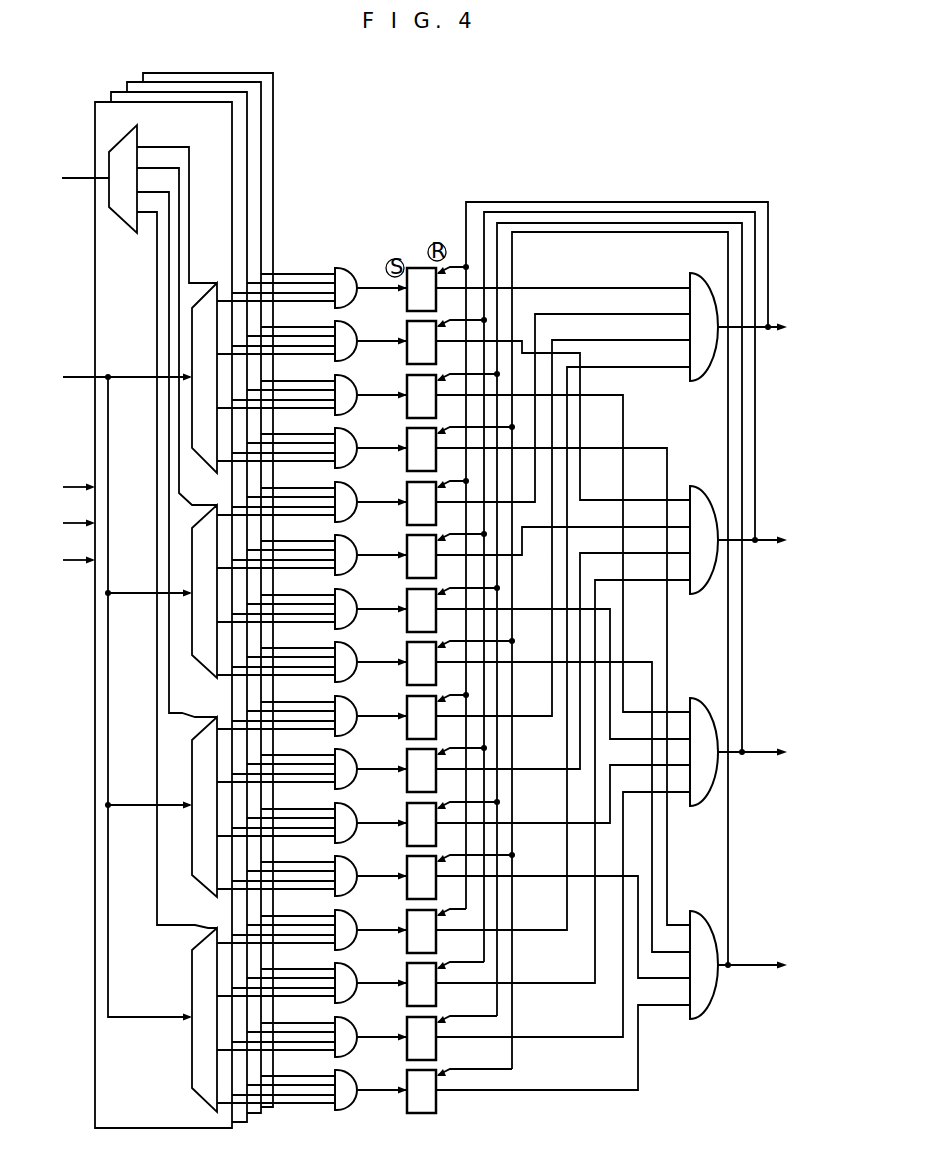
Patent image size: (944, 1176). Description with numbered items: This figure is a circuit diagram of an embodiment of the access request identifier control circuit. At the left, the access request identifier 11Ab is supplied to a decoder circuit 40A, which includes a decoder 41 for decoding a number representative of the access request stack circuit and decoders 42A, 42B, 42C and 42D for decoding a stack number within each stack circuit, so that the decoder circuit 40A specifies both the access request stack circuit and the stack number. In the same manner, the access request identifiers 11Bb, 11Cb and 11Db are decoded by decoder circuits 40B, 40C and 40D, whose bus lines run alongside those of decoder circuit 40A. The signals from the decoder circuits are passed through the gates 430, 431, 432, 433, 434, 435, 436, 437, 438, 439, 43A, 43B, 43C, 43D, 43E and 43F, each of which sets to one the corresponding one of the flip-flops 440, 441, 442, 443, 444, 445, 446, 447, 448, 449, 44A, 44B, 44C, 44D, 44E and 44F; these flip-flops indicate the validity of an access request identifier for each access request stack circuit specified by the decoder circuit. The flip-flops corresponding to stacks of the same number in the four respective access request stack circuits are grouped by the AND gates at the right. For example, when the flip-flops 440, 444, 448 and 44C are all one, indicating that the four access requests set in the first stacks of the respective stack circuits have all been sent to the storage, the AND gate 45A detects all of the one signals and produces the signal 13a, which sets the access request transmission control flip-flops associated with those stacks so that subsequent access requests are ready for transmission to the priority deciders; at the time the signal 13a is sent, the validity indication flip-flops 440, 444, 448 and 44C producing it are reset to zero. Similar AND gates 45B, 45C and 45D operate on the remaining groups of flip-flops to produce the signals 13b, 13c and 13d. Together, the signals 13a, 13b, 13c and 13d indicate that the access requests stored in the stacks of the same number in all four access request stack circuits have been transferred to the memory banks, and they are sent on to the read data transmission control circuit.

The decoder circuit 40A is at (97, 101).
The decoder circuit 40B is at (116, 91).
The decoder circuit 40C is at (137, 81).
The decoder circuit 40D is at (176, 72).
The decoder 41 is at (158, 518).
The access request identifier 11Ab is at (80, 176).
The access request identifier 11Bb is at (68, 485).
The access request identifier 11Cb is at (68, 521).
The access request identifier 11Db is at (68, 558).
The decoder 42A is at (210, 282).
The decoder 42B is at (210, 504).
The decoder 42C is at (210, 716).
The decoder 42D is at (210, 927).
The OR gate 430 is at (337, 268).
The OR gate 431 is at (337, 321).
The OR gate 432 is at (337, 375).
The OR gate 433 is at (337, 428).
The OR gate 434 is at (337, 482).
The OR gate 435 is at (337, 535).
The OR gate 436 is at (337, 589).
The OR gate 437 is at (337, 642).
The OR gate 438 is at (337, 696).
The OR gate 439 is at (337, 749).
The OR gate 43A is at (337, 803).
The OR gate 43B is at (337, 856).
The OR gate 43C is at (337, 910).
The OR gate 43D is at (337, 963).
The OR gate 43E is at (337, 1017).
The OR gate 43F is at (337, 1070).
The flip-flop 440 is at (406, 306).
The flip-flop 441 is at (405, 364).
The flip-flop 442 is at (405, 418).
The flip-flop 443 is at (405, 471).
The flip-flop 444 is at (405, 525).
The flip-flop 445 is at (405, 578).
The flip-flop 446 is at (405, 632).
The flip-flop 447 is at (405, 685).
The flip-flop 448 is at (405, 739).
The flip-flop 449 is at (405, 792).
The flip-flop 44A is at (405, 846).
The flip-flop 44B is at (405, 899).
The flip-flop 44C is at (405, 953).
The flip-flop 44D is at (405, 1006).
The flip-flop 44E is at (405, 1060).
The flip-flop 44F is at (405, 1114).
The AND gate 45A is at (690, 274).
The AND gate 45B is at (690, 487).
The AND gate 45C is at (690, 699).
The AND gate 45D is at (690, 912).
The signal 13a is at (775, 324).
The signal 13b is at (768, 537).
The signal 13c is at (760, 749).
The signal 13d is at (760, 962).